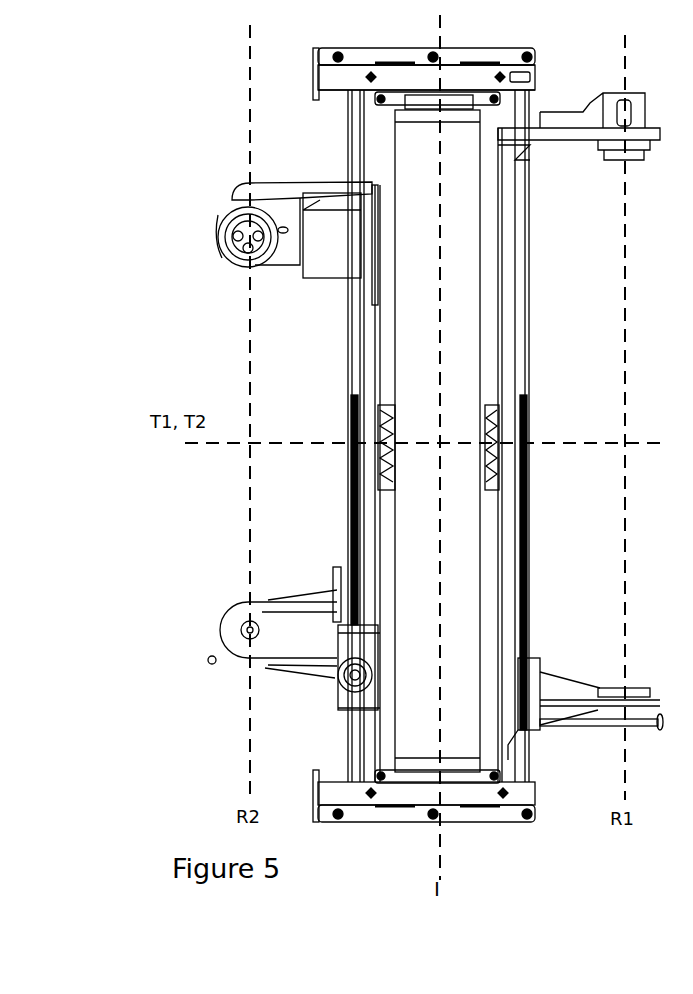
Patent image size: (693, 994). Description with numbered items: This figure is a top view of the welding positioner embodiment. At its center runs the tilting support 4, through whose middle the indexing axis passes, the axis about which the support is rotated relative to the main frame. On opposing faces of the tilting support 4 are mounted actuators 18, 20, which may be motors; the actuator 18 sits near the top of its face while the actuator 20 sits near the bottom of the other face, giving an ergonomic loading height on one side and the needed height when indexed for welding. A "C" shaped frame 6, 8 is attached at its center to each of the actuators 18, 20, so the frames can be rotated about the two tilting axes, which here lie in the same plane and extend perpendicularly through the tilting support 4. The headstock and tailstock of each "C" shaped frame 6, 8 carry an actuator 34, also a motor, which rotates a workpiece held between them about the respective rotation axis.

The tilting support 4 is at (468, 585).
The C shaped frame 6 is at (352, 348).
The C shaped frame 8 is at (530, 340).
The actuator 18 is at (385, 413).
The actuator 20 is at (497, 413).
The actuator 34 is at (270, 186).